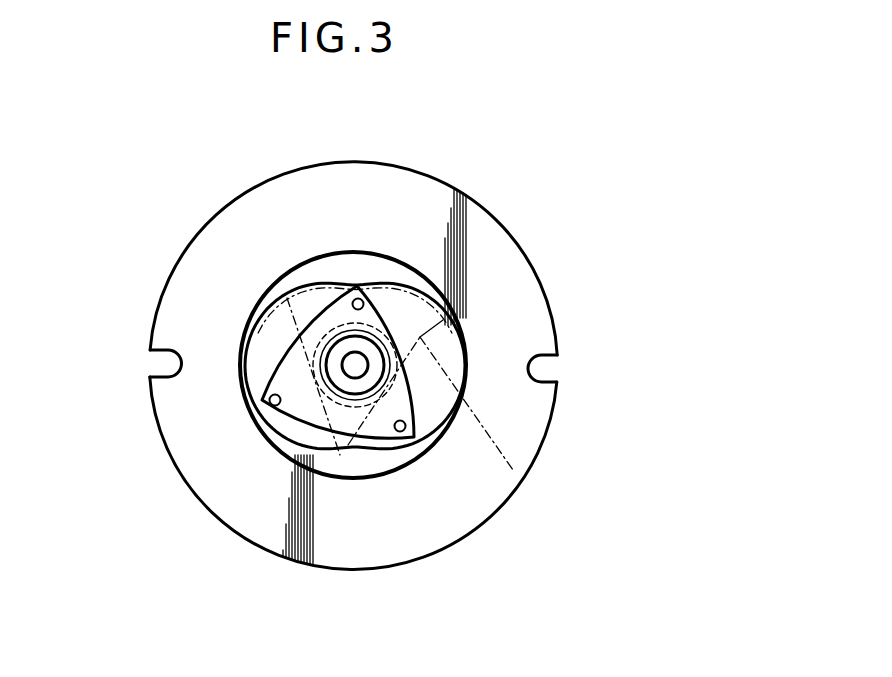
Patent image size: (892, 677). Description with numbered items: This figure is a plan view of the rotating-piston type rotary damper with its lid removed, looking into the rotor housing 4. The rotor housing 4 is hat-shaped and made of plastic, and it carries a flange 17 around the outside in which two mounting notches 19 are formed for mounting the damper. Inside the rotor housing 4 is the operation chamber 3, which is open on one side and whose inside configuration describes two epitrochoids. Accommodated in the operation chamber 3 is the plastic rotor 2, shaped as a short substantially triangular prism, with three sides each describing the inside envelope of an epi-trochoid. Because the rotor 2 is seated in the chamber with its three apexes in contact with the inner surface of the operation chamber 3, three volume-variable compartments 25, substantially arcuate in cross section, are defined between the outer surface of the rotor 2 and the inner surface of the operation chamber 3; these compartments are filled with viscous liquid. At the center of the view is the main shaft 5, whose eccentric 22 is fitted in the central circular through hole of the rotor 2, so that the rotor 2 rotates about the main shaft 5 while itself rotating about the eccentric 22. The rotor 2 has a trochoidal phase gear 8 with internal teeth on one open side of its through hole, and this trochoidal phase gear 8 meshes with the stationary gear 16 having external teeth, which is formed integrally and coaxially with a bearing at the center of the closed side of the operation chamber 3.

The rotor 2 is at (406, 399).
The operation chamber 3 is at (393, 282).
The volume-variable compartments 25 is at (403, 283).
The rotor housing 4 is at (228, 231).
The main shaft 5 is at (355, 366).
The trochoidal phase gear 8 is at (339, 256).
The stationary gear 16 is at (342, 338).
The flange 17 is at (513, 281).
The mounting notches 19 is at (160, 361).
The eccentric 22 is at (337, 330).